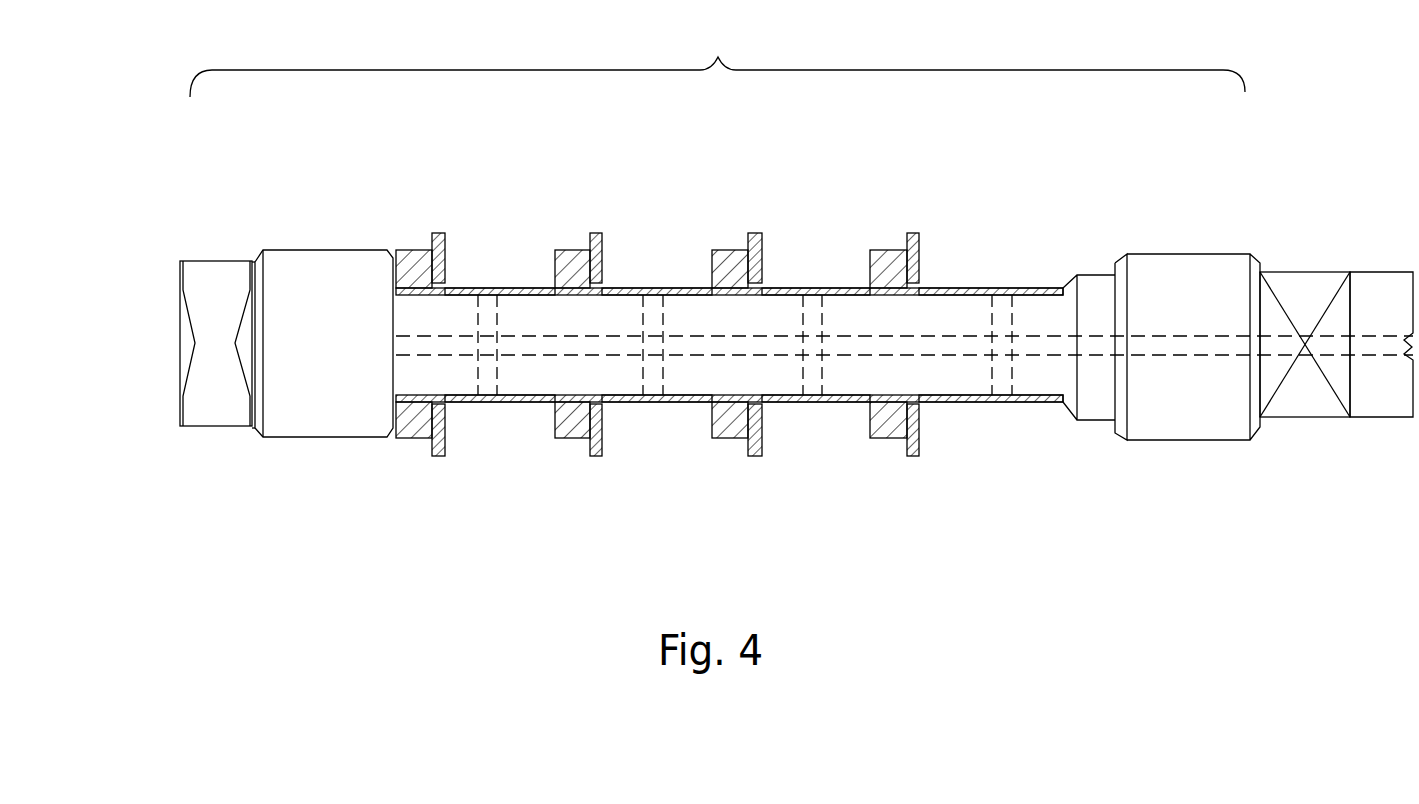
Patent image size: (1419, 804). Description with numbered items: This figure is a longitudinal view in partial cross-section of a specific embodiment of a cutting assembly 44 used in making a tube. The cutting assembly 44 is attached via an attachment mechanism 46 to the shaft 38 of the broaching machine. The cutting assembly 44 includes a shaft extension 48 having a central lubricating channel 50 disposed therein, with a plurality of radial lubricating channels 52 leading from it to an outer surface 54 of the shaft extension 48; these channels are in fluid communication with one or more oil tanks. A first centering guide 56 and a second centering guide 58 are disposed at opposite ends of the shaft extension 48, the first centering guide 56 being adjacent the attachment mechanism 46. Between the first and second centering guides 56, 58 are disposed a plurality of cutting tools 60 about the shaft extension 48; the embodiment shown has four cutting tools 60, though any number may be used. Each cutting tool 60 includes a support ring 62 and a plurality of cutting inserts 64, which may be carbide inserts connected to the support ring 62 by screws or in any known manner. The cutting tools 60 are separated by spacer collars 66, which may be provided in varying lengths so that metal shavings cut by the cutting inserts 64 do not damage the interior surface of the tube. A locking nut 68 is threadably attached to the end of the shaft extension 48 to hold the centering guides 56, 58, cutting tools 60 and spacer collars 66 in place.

The cutting assembly 44 is at (717, 60).
The shaft 38 is at (1393, 290).
The attachment mechanism 46 is at (1305, 295).
The shaft extension 48 is at (1035, 375).
The central lubricating channel 50 is at (962, 358).
The radial lubricating channels 52 is at (815, 403).
The outer surface 54 is at (840, 403).
The first centering guide 56 is at (1170, 278).
The second centering guide 58 is at (330, 270).
The cutting tools 60 is at (682, 350).
The support ring 62 is at (400, 438).
The cutting inserts 64 is at (445, 437).
The spacer collars 66 is at (533, 287).
The locking nut 68 is at (223, 427).